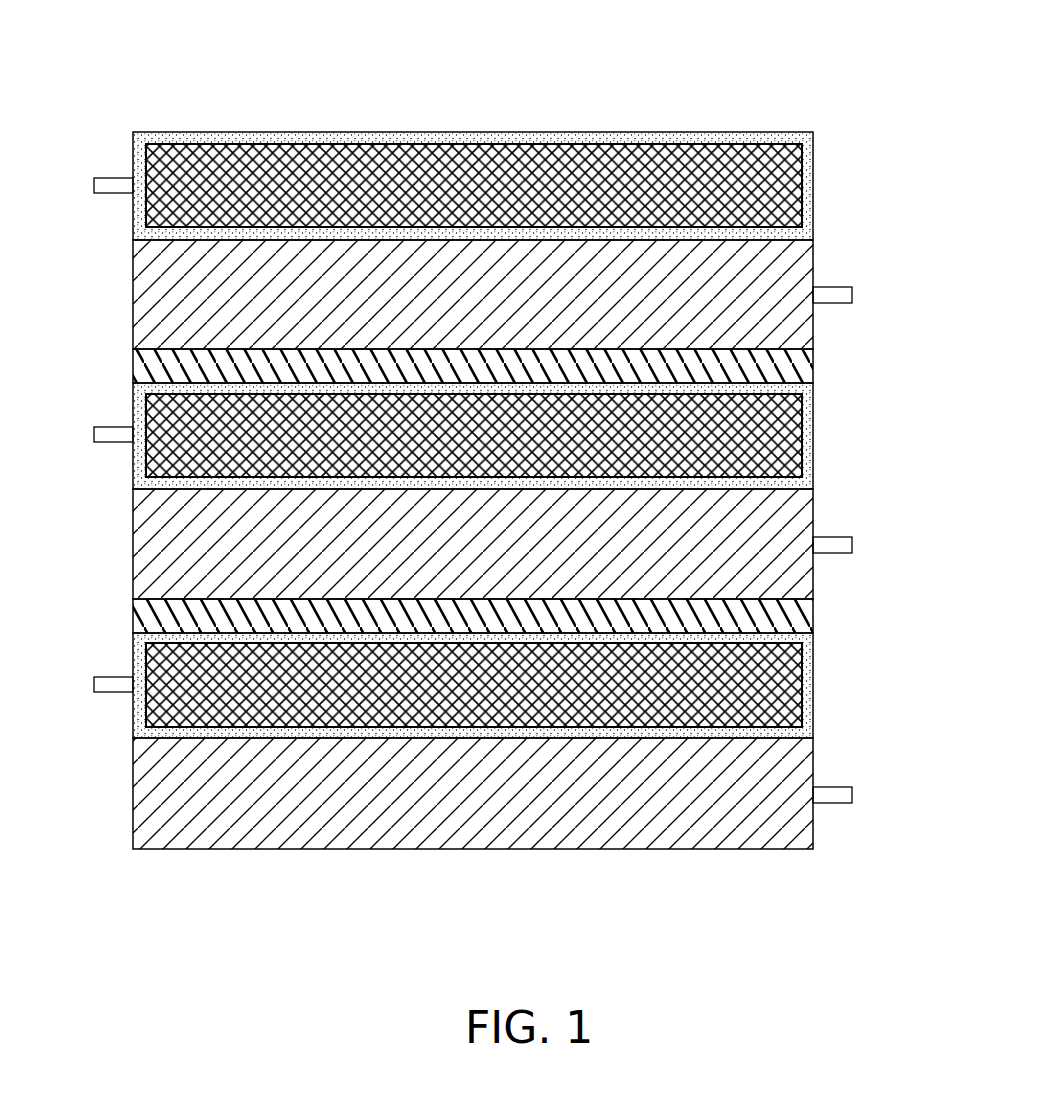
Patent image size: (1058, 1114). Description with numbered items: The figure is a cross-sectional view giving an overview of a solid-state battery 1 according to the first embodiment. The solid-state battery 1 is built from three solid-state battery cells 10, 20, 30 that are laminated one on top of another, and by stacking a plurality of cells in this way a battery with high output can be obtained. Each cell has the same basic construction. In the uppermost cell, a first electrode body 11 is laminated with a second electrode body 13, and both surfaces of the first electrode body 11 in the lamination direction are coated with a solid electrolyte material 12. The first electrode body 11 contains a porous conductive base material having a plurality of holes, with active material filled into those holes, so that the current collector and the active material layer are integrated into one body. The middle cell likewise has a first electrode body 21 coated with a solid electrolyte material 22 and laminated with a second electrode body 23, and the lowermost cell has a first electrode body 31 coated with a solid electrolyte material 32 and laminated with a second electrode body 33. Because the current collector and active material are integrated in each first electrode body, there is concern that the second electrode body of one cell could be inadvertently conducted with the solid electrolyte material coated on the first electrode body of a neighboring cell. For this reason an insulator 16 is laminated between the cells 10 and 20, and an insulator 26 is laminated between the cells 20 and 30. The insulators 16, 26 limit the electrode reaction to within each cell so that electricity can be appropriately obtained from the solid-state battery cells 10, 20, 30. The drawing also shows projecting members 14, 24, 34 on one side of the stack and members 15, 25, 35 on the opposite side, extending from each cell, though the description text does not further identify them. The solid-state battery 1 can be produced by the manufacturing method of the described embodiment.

The solid-state battery 1 is at (777, 71).
The solid-state battery cell 10 is at (503, 257).
The first electrode body 11 is at (802, 166).
The solid electrolyte material 12 is at (813, 207).
The second electrode body 13 is at (813, 262).
The first positive electrode tab 14 is at (119, 195).
The first negative electrode tab 15 is at (859, 309).
The insulator 16 is at (813, 366).
The solid-state battery cell 20 is at (503, 508).
The first electrode body 21 is at (802, 418).
The solid electrolyte material 22 is at (813, 457).
The second electrode body 23 is at (813, 512).
The second positive electrode tab 24 is at (119, 445).
The second negative electrode tab 25 is at (859, 559).
The insulator 26 is at (813, 616).
The solid-state battery cell 30 is at (503, 741).
The first electrode body 31 is at (802, 668).
The solid electrolyte material 32 is at (813, 707).
The second electrode body 33 is at (813, 762).
The third positive electrode tab 34 is at (119, 695).
The third negative electrode tab 35 is at (859, 809).